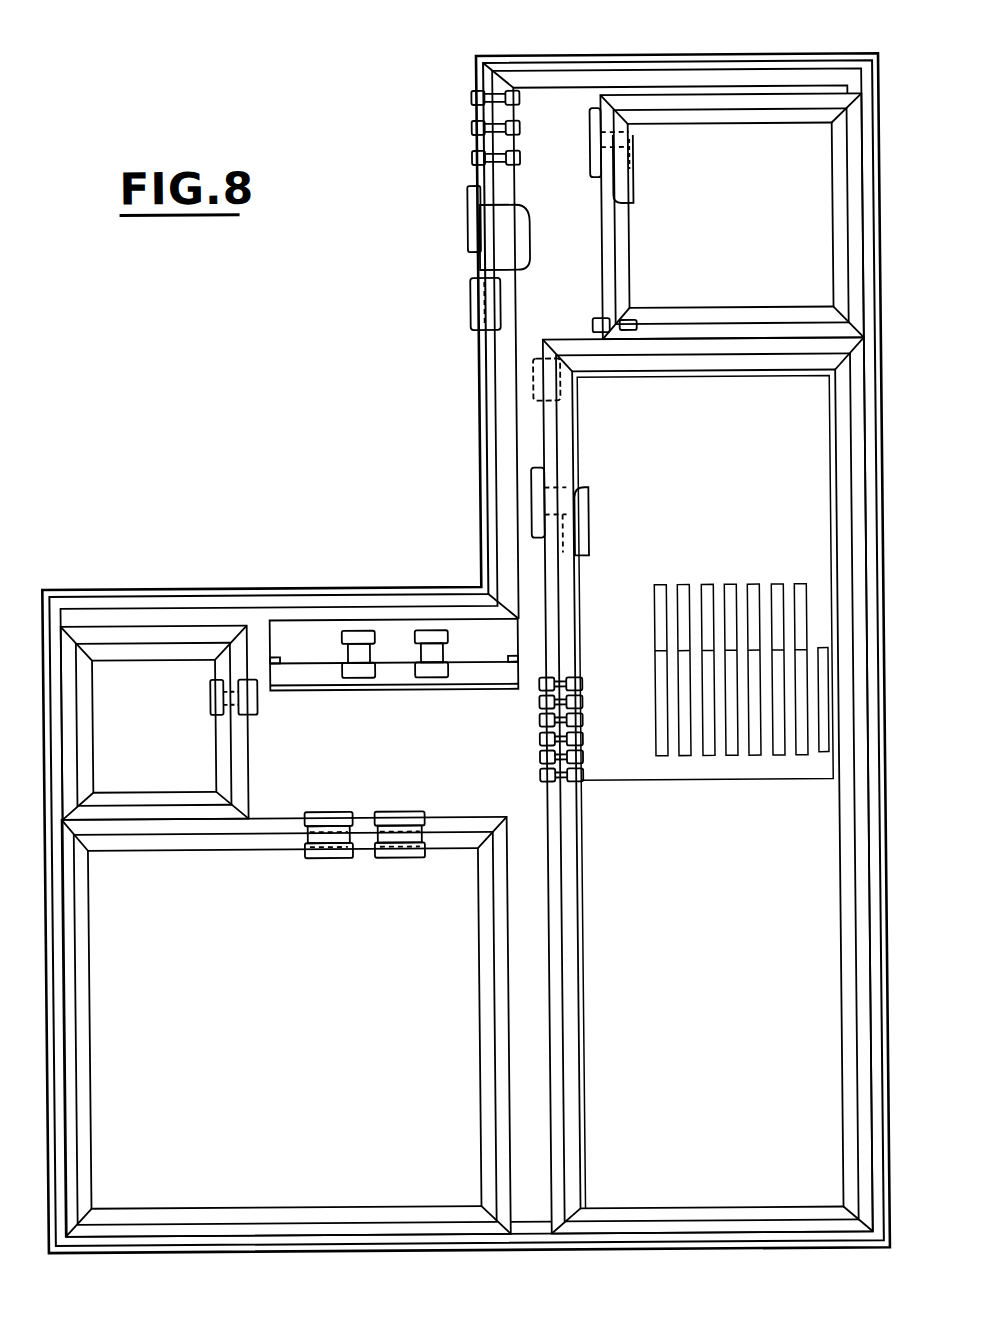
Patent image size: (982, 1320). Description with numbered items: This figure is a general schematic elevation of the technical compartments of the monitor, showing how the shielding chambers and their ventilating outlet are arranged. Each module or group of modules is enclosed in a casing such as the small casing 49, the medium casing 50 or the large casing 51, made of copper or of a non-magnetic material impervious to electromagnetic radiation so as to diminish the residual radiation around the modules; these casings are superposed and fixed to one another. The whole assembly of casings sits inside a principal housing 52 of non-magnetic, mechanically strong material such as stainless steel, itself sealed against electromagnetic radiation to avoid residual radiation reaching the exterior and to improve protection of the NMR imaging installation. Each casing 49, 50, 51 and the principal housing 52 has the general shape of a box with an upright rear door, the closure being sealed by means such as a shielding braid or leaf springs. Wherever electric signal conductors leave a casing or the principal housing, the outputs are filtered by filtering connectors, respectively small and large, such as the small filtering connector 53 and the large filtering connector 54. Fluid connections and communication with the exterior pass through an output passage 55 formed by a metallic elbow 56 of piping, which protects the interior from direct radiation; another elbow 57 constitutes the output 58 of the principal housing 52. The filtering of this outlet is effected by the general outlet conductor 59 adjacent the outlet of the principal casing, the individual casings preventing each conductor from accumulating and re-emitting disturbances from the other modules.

The small casing 49 is at (782, 160).
The medium casing 50 is at (363, 1186).
The large casing 51 is at (660, 1186).
The principal housing 52 is at (218, 1260).
The small filtering connector 53 is at (275, 704).
The large filtering connector 54 is at (381, 624).
The output passage 55 is at (582, 131).
The metallic elbow 56 is at (632, 172).
The elbow 57 is at (529, 238).
The output of the principal casing 58 is at (456, 224).
The general outlet conductor 59 is at (468, 312).